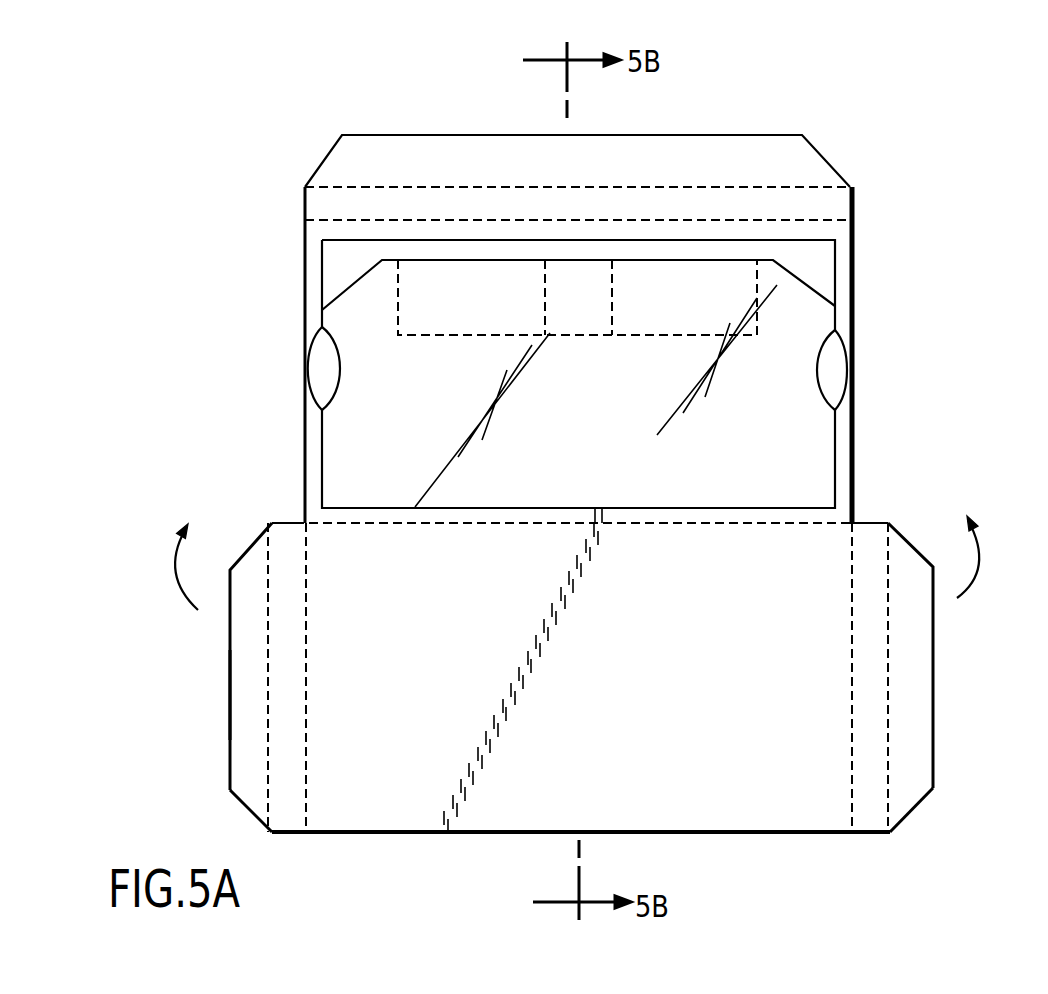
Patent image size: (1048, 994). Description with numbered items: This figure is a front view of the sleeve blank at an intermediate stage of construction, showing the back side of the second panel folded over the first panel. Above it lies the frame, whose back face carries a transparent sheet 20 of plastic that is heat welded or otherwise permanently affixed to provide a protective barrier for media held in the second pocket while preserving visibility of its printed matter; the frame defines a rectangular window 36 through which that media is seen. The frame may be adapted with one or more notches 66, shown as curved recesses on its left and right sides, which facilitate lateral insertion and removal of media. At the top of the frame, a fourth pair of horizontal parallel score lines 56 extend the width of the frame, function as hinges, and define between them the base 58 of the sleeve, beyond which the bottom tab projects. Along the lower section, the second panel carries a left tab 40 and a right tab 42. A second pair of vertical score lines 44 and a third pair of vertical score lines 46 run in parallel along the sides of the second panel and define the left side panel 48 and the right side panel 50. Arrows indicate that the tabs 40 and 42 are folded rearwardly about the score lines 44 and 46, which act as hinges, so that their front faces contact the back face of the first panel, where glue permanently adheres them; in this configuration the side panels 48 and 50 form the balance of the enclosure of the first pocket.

The fourth pair of score lines 56 is at (708, 187).
The base 58 is at (528, 203).
The transparent sheet 20 is at (376, 457).
The window 36 is at (608, 424).
The notches 66 is at (320, 372).
The left side panel 48 is at (292, 555).
The right side panel 50 is at (873, 522).
The left tab 40 is at (230, 728).
The second pair of score lines 44 is at (268, 762).
The third pair of score lines 46 is at (890, 660).
The right tab 42 is at (937, 760).